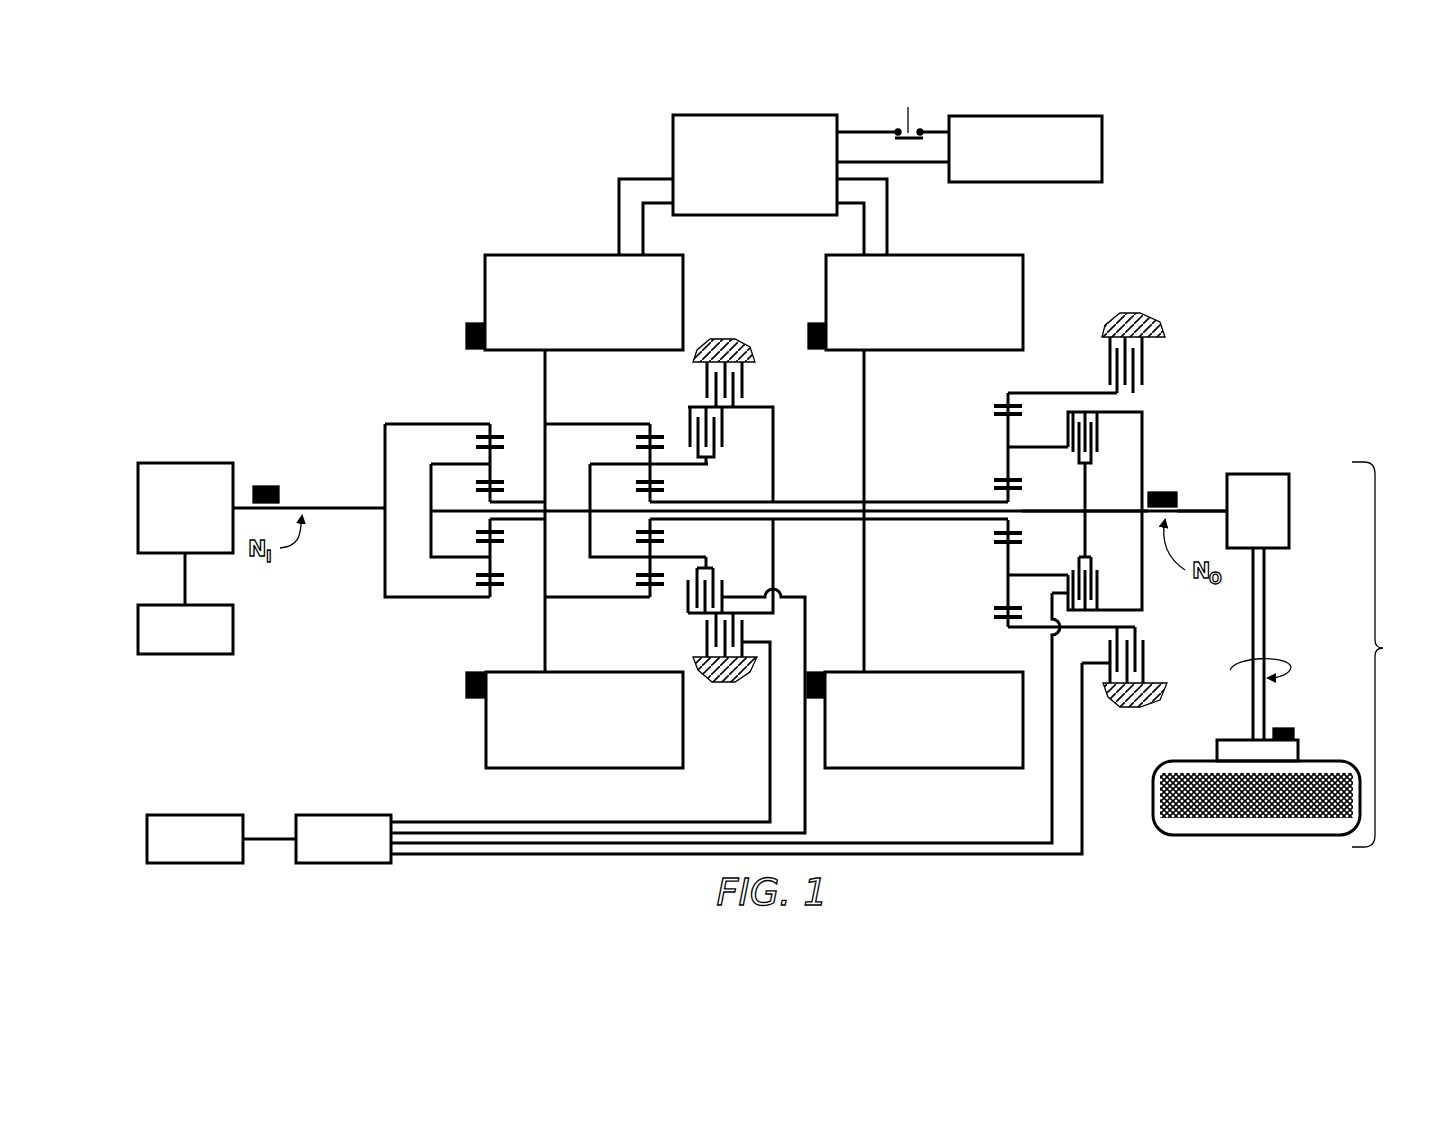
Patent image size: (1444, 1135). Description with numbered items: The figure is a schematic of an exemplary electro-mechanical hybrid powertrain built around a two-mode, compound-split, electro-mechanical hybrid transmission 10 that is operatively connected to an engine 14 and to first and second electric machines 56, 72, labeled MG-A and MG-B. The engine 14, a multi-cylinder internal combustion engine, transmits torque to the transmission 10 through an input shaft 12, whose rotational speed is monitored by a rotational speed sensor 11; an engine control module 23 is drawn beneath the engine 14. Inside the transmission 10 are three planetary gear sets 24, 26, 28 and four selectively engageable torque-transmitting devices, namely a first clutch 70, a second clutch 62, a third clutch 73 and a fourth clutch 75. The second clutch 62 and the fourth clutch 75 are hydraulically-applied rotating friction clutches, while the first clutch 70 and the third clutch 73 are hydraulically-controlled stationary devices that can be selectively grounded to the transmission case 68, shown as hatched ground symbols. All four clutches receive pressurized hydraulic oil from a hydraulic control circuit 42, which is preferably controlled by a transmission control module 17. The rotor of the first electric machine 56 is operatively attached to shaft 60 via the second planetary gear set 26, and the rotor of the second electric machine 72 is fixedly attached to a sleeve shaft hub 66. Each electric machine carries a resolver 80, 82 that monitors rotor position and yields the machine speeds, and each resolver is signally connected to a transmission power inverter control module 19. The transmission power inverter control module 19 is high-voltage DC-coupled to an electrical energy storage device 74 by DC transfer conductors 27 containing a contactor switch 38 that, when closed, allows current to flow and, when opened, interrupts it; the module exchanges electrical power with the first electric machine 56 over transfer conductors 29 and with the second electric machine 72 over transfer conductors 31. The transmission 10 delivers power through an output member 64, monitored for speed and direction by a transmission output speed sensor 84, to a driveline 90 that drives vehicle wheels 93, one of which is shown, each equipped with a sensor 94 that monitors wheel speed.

The electro-mechanical hybrid transmission 10 is at (440, 214).
The rotational speed sensor 11 is at (265, 486).
The input shaft 12 is at (342, 506).
The engine 14 is at (192, 463).
The transmission control module 17 is at (185, 815).
The transmission power inverter control module 19 is at (673, 131).
The engine control module 23 is at (233, 653).
The first planetary gear set 24 is at (478, 418).
The second planetary gear set 26 is at (645, 418).
The DC transfer conductors 27 is at (853, 131).
The third planetary gear set 28 is at (994, 392).
The transfer conductors 29 is at (619, 211).
The transfer conductors 31 is at (887, 212).
The contactor switch 38 is at (912, 123).
The hydraulic control circuit 42 is at (310, 815).
The first electric machine 56 is at (485, 288).
The shaft 60 is at (1058, 510).
The clutch C2 62 is at (1106, 452).
The output member 64 is at (1195, 507).
The sleeve shaft hub 66 is at (900, 500).
The transmission case 68 is at (727, 342).
The clutch C1 70 is at (1098, 356).
The second electric machine 72 is at (1023, 271).
The clutch C3 73 is at (752, 384).
The electrical energy storage device 74 is at (1102, 139).
The clutch C4 75 is at (728, 440).
The resolver 80 is at (466, 336).
The resolver 82 is at (816, 322).
The transmission output speed sensor 84 is at (1165, 492).
The driveline 90 is at (1384, 648).
The vehicle wheel 93 is at (1217, 752).
The wheel speed sensor 94 is at (1285, 728).